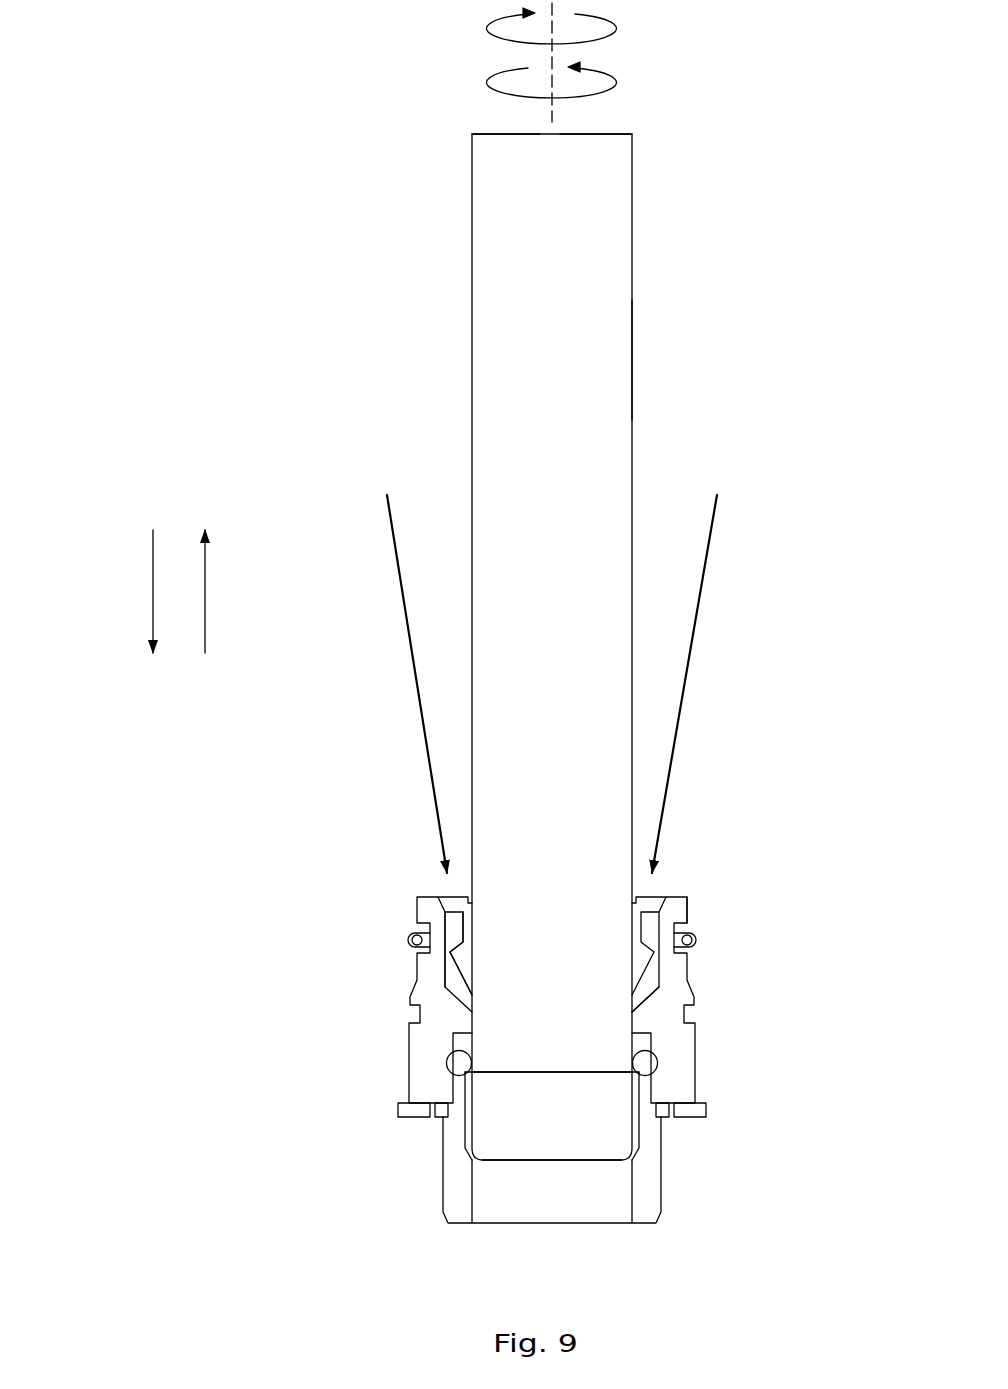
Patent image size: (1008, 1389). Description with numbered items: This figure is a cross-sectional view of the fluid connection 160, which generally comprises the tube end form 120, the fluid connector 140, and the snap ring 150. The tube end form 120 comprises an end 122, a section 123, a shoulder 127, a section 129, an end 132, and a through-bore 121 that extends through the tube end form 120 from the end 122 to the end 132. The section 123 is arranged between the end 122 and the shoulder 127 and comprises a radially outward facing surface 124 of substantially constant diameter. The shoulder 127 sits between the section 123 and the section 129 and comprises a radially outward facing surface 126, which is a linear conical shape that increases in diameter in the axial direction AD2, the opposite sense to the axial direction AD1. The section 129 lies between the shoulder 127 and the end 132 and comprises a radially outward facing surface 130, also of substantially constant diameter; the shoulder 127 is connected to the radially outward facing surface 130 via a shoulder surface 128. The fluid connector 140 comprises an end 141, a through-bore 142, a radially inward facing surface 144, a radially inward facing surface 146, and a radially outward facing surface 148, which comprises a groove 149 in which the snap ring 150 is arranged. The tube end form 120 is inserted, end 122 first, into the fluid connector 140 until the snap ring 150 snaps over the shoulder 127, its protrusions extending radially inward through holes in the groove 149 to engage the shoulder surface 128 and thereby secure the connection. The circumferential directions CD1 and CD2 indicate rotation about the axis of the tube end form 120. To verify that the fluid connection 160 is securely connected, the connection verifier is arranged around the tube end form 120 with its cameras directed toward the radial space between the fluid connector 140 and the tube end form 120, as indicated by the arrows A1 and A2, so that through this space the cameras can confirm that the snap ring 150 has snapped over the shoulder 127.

The tube end form 120 is at (622, 223).
The through-bore 121 is at (497, 128).
The end 122 is at (503, 1160).
The section 123 is at (435, 1085).
The radially outward facing surface 124 is at (638, 1128).
The radially outward facing surface 126 is at (450, 973).
The shoulder 127 is at (457, 997).
The shoulder surface 128 is at (457, 947).
The section 129 is at (372, 805).
The radially outward facing surface 130 is at (632, 362).
The end 132 is at (604, 134).
The fluid connector 140 is at (645, 1200).
The end 141 is at (680, 897).
The through-bore 142 is at (568, 1198).
The radially inward facing surface 144 is at (653, 970).
The radially inward facing surface 146 is at (638, 1003).
The radially outward facing surface 148 is at (690, 908).
The groove 149 is at (705, 945).
The snap ring 150 is at (697, 937).
The fluid connection 160 is at (353, 1227).
The arrow A1 is at (401, 583).
The arrow A2 is at (703, 603).
The axial direction AD1 is at (153, 568).
The axial direction AD2 is at (205, 590).
The circumferential direction CD1 is at (612, 33).
The circumferential direction CD2 is at (612, 82).